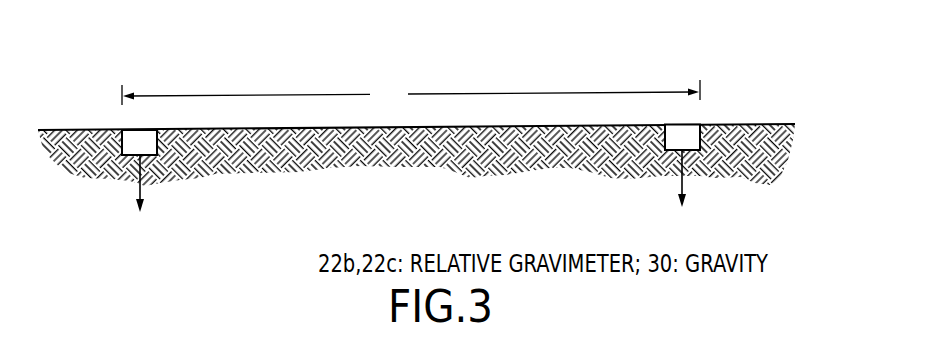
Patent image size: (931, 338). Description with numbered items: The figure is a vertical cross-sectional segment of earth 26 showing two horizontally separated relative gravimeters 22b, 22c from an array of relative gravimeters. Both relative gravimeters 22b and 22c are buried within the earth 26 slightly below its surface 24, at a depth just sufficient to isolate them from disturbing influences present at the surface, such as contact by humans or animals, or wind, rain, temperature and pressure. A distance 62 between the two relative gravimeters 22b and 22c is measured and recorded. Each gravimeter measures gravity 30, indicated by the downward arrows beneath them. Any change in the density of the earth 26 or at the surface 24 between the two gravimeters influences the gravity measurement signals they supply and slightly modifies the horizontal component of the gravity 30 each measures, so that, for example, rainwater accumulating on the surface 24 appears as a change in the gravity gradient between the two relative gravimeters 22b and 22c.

The relative gravimeter 22b is at (133, 137).
The relative gravimeter 22c is at (688, 132).
The earth surface 24 is at (442, 128).
The earth 26 is at (490, 153).
The gravity 30 is at (143, 188).
The distance 62 is at (411, 93).